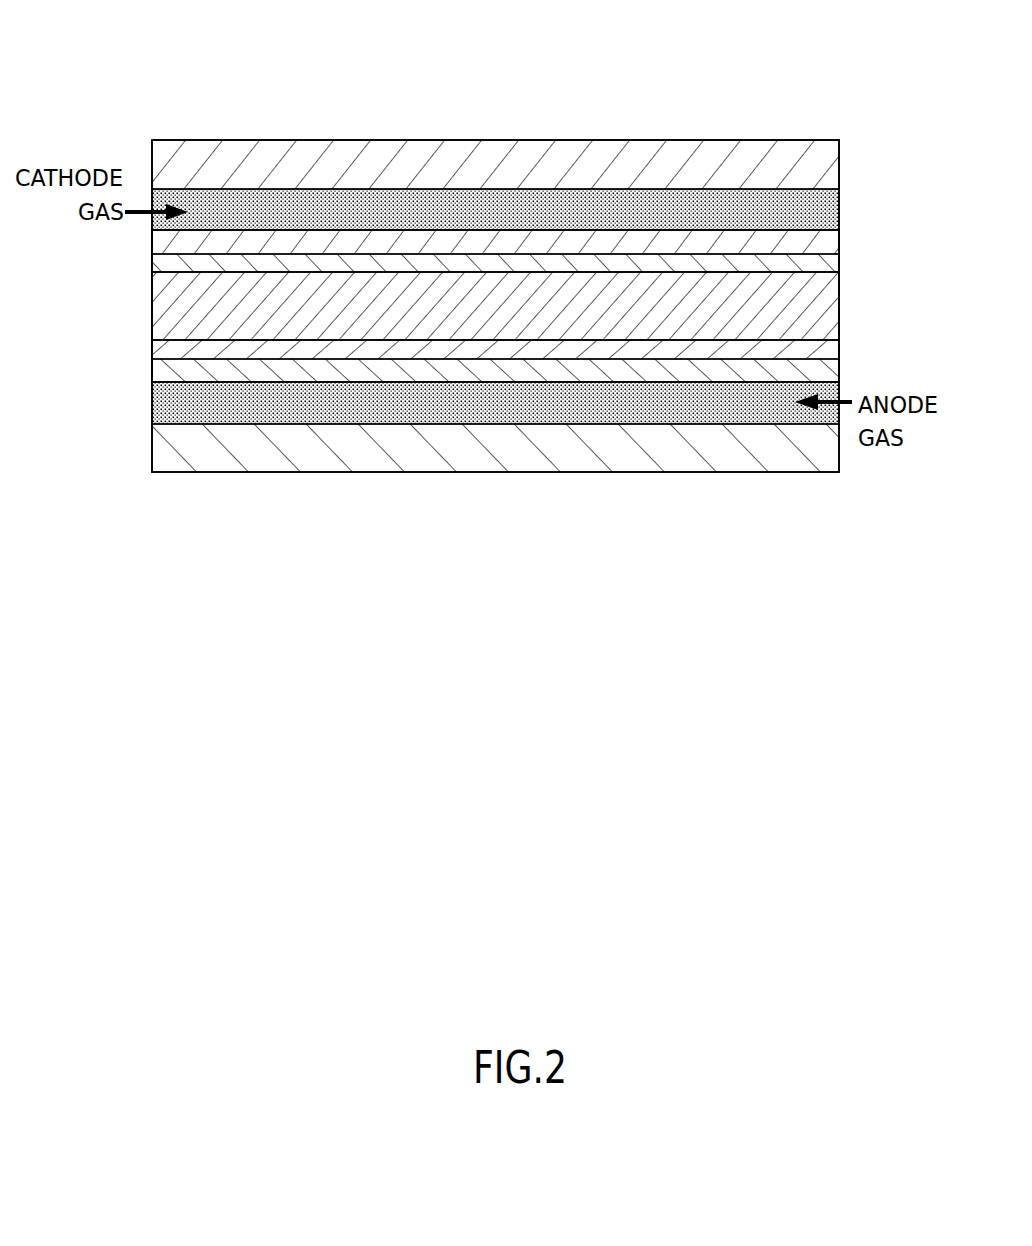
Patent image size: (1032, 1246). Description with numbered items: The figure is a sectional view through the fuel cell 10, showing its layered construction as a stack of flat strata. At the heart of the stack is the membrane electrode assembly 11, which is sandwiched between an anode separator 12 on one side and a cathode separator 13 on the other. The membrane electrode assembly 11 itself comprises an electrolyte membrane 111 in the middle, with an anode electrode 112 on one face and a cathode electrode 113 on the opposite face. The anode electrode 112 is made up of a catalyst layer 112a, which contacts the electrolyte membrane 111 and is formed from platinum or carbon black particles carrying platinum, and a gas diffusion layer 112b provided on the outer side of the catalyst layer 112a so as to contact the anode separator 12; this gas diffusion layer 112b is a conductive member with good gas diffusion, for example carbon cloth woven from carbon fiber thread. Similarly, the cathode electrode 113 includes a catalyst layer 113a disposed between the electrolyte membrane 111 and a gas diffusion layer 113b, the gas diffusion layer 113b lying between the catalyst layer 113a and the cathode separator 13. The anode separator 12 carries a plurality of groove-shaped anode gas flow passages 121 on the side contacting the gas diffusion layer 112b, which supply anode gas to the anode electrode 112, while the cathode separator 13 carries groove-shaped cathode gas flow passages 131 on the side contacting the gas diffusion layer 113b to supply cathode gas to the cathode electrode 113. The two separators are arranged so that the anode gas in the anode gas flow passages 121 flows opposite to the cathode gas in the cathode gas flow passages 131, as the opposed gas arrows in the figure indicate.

The fuel cell 10 is at (470, 91).
The membrane electrode assembly 11 is at (900, 228).
The electrolyte membrane 111 is at (839, 301).
The anode electrode 112 is at (848, 340).
The catalyst layer 112a is at (153, 352).
The gas diffusion layer 112b is at (153, 375).
The cathode electrode 113 is at (848, 230).
The catalyst layer 113a is at (153, 265).
The gas diffusion layer 113b is at (153, 244).
The anode separator 12 is at (673, 458).
The anode gas flow passages 121 is at (796, 403).
The cathode separator 13 is at (665, 150).
The cathode gas flow passages 131 is at (778, 212).